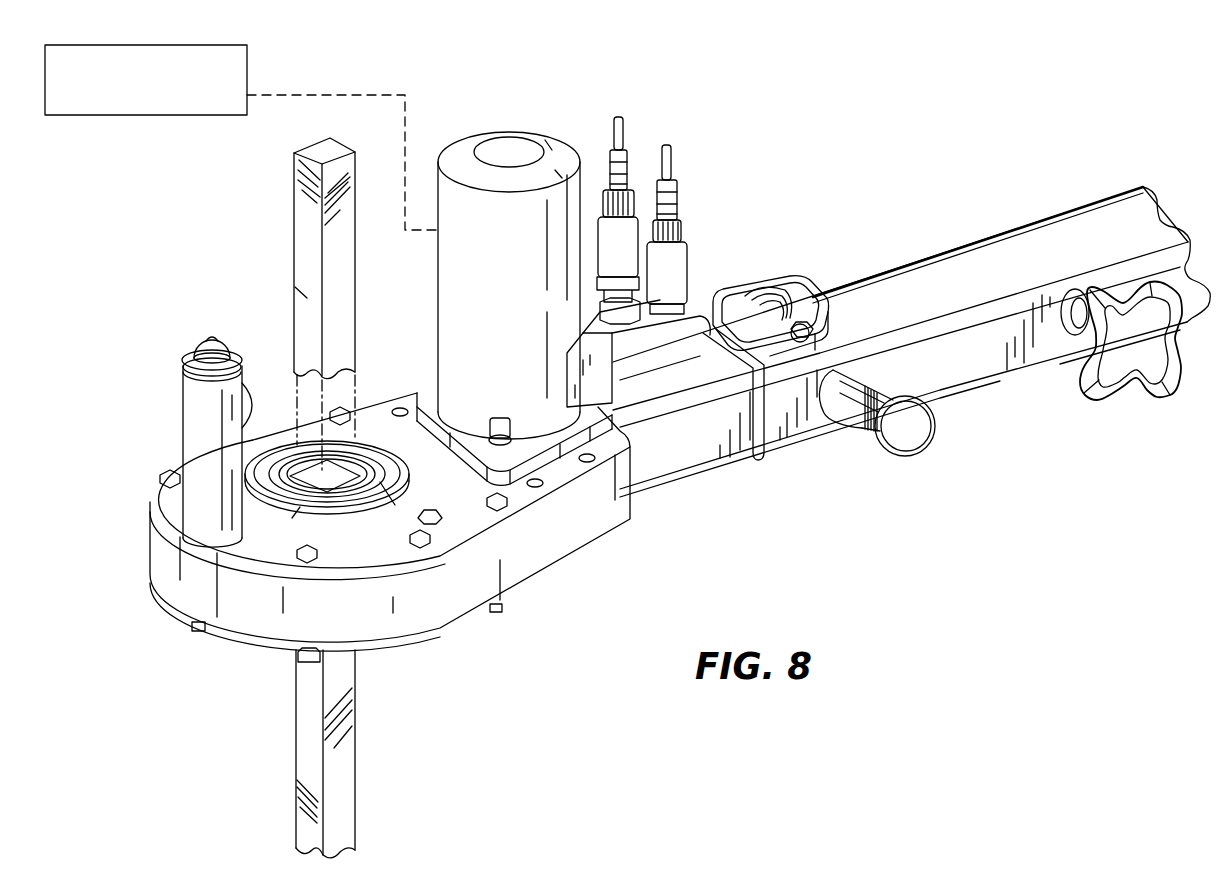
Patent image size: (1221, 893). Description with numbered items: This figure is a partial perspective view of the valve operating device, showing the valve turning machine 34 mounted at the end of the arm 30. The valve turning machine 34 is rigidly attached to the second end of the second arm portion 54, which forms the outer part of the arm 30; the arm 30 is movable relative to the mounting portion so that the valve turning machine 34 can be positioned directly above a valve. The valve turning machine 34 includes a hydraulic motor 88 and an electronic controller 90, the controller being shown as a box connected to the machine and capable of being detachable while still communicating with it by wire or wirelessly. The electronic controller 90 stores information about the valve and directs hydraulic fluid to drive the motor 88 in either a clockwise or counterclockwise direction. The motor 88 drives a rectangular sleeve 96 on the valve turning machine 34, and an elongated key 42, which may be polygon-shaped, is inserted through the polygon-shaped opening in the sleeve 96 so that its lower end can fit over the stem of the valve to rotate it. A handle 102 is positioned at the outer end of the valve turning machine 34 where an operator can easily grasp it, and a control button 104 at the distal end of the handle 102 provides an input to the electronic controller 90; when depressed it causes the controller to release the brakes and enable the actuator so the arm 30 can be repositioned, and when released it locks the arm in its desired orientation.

The arm 30 is at (1048, 216).
The valve turning machine 34 is at (217, 640).
The elongated key 42 is at (337, 820).
The second arm portion 54 is at (960, 247).
The hydraulic motor 88 is at (547, 140).
The electronic controller 90 is at (248, 68).
The rectangular sleeve 96 is at (360, 492).
The handle 102 is at (203, 412).
The control button 104 is at (207, 337).